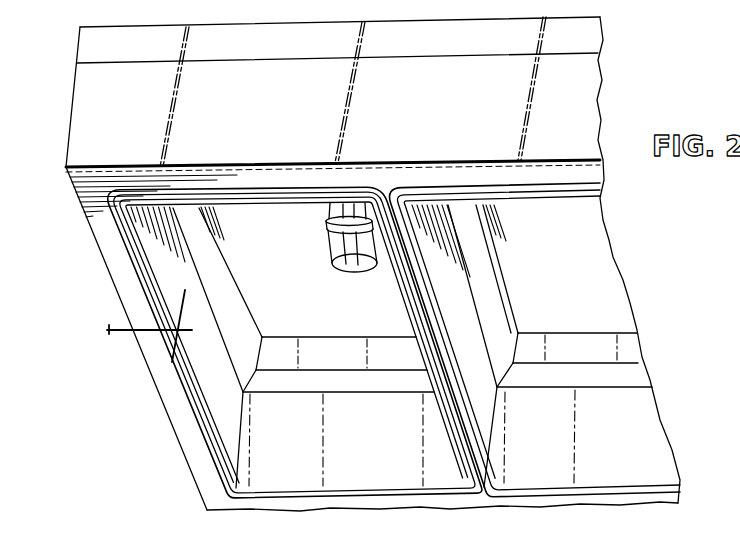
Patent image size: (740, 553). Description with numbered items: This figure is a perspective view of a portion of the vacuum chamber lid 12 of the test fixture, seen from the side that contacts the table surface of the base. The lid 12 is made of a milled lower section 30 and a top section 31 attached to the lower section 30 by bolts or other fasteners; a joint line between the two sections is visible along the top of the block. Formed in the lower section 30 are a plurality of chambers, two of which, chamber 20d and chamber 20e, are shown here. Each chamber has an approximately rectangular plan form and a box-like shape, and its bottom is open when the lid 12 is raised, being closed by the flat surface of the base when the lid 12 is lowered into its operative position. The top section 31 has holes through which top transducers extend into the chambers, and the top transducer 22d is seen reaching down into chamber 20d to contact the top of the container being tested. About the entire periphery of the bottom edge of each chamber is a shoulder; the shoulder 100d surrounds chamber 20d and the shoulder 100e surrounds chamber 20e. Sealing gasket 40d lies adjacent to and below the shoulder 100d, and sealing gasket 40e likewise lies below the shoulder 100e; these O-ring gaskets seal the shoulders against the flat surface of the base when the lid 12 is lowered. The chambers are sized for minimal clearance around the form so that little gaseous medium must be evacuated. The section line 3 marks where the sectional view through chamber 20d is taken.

The vacuum chamber lid 12 is at (66, 92).
The top section 31 is at (577, 44).
The lower section 30 is at (571, 111).
The sealing gasket 40d is at (205, 438).
The sealing gasket 40e is at (479, 495).
The shoulder 100d is at (235, 496).
The shoulder 100e is at (571, 491).
The chamber 20d is at (331, 322).
The chamber 20e is at (603, 298).
The top transducer 22d is at (328, 246).
The section line 3- 3 is at (111, 321).